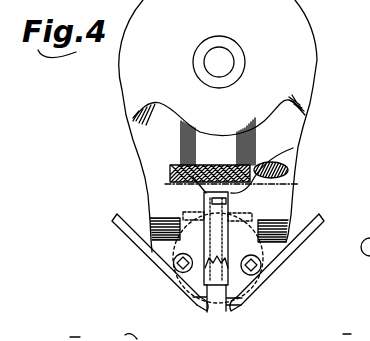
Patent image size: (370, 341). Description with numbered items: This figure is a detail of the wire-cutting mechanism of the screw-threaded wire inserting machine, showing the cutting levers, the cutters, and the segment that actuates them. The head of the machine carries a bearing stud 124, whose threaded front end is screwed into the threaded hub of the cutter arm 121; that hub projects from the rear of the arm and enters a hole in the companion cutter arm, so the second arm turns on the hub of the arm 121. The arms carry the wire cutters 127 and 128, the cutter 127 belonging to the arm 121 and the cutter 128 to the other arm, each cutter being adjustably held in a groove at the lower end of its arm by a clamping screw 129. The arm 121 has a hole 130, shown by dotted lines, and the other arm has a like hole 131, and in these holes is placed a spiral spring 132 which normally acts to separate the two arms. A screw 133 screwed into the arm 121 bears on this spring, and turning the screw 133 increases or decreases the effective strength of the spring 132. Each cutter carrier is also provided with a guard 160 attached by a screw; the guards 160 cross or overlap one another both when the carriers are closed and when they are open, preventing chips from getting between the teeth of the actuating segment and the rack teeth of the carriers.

The cutter arm 121 is at (309, 93).
The bearing stud 124 is at (221, 59).
The cutter 127 is at (318, 214).
The cutter 128 is at (117, 216).
The clamping screws 129 is at (302, 275).
The hole 130 is at (293, 148).
The hole 131 is at (170, 173).
The spiral spring 132 is at (204, 190).
The screw 133 is at (301, 176).
The guard 160 is at (221, 307).